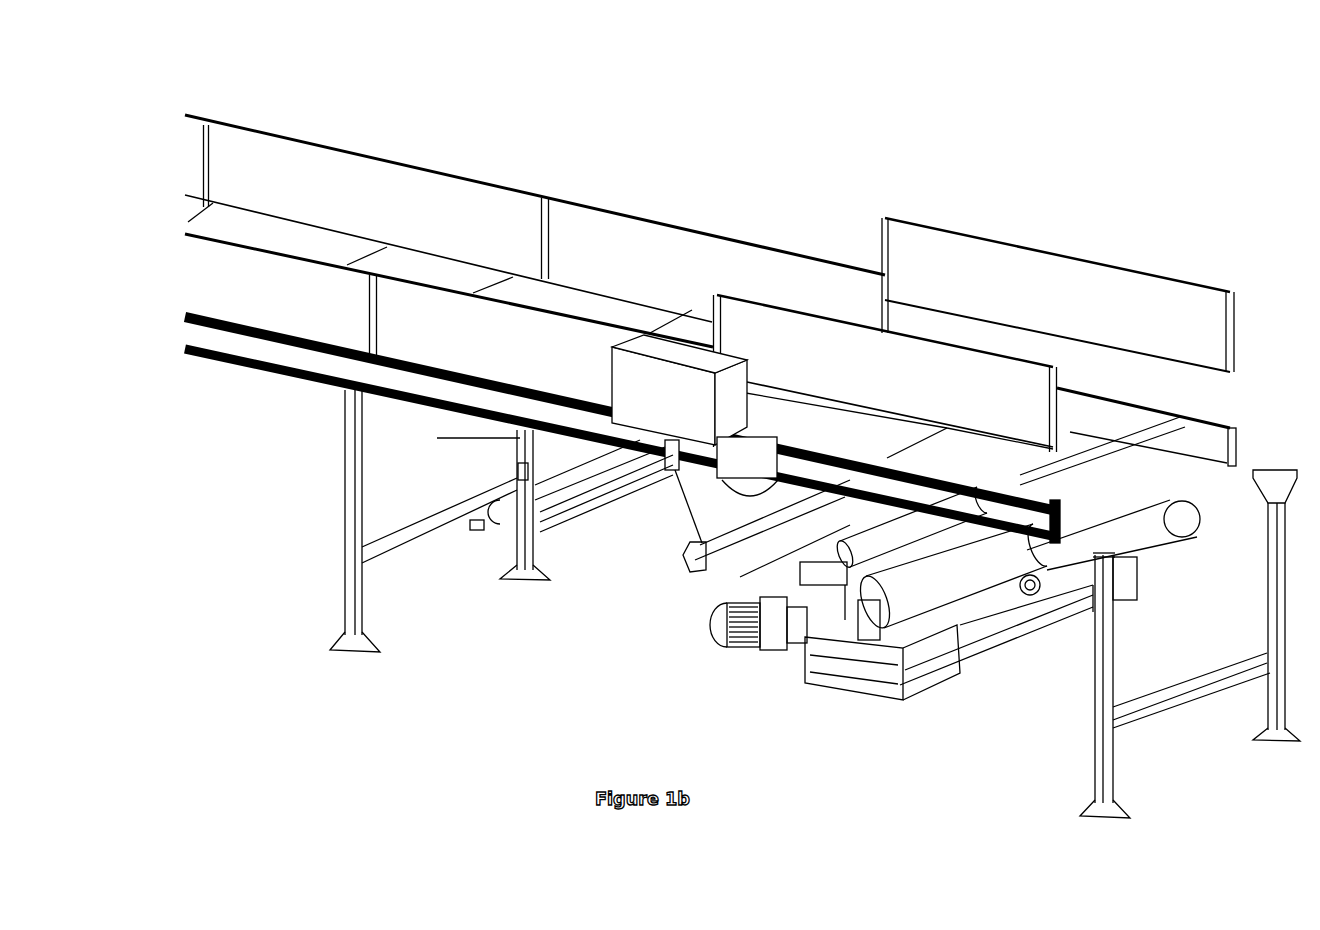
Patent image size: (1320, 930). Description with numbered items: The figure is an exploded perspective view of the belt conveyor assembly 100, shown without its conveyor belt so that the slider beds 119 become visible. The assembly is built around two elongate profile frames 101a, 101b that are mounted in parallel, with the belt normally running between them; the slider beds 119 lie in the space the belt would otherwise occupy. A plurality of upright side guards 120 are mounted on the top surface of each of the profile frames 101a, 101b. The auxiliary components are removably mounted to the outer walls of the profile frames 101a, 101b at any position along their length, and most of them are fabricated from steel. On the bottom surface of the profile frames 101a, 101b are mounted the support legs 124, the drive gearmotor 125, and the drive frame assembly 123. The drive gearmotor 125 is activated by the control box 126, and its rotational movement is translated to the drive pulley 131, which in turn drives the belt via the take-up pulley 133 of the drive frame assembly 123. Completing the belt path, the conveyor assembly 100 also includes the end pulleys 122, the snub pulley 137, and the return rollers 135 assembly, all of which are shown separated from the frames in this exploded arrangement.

The belt conveyor assembly 100 is at (400, 675).
The profile frame 101a is at (1037, 518).
The profile frame 101b is at (1213, 437).
The slider beds 119 is at (834, 441).
The upright side guards 120 is at (1088, 316).
The end pulleys 122 is at (1167, 517).
The drive frame assembly 123 is at (1000, 647).
The support legs 124 is at (353, 517).
The drive gearmotor 125 is at (727, 635).
The control box 126 is at (676, 393).
The drive pulley 131 is at (908, 593).
The take-up pulley 133 is at (967, 597).
The return rollers 135 is at (707, 543).
The snub pulley 137 is at (532, 492).